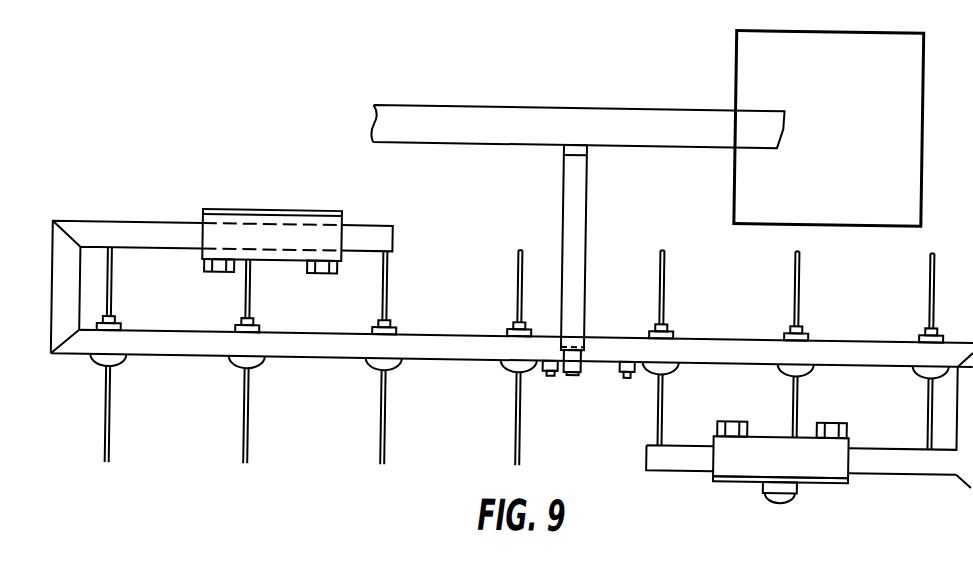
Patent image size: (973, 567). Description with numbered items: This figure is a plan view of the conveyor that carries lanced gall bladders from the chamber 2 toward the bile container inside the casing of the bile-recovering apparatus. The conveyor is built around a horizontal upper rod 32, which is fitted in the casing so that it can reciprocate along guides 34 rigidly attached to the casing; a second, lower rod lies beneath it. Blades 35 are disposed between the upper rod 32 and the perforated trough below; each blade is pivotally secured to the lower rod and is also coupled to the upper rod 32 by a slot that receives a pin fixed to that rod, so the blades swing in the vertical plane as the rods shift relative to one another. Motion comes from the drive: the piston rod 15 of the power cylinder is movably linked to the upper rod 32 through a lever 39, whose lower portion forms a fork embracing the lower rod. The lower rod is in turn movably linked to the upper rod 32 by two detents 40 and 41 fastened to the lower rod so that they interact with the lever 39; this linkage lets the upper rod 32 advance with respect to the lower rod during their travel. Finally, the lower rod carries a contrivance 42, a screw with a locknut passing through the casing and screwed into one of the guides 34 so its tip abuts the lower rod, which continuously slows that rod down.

The chamber 2 is at (904, 61).
The piston rod 15 is at (522, 133).
The upper rod 32 is at (428, 343).
The guides 34 is at (263, 221).
The blades 35 is at (400, 438).
The lever 39 is at (576, 199).
The detent 40 is at (552, 375).
The detent 41 is at (626, 376).
The contrivance 42 is at (772, 498).